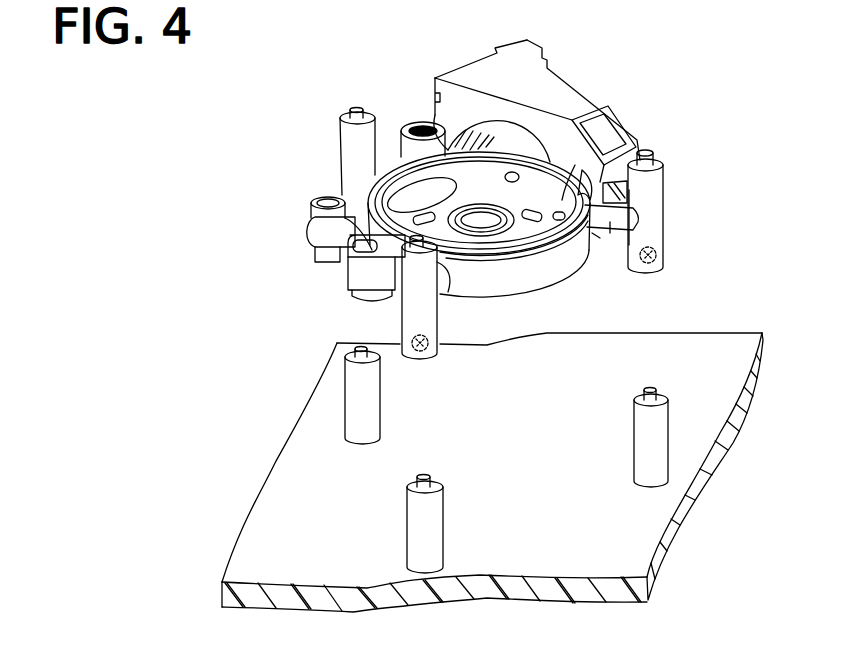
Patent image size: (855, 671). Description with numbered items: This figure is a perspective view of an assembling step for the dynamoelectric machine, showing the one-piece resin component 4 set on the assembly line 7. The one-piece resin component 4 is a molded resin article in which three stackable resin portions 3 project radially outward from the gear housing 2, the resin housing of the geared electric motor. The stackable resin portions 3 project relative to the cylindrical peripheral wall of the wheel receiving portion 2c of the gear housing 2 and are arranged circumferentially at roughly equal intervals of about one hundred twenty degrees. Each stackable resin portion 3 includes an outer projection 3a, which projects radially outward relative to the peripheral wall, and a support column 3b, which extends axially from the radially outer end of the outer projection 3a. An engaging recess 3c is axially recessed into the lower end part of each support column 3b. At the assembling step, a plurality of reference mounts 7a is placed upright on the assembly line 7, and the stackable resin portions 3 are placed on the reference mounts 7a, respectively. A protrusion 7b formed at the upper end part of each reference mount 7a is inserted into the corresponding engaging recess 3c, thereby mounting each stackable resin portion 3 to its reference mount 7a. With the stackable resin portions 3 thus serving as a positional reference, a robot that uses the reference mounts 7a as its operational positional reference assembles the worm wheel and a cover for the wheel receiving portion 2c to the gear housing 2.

The gear housing 2 is at (587, 93).
The wheel receiving portion 2c is at (523, 163).
The stackable resin portion 3 is at (340, 159).
The outer projection 3a is at (612, 222).
The support column 3b is at (653, 218).
The engaging recess 3c is at (663, 250).
The one-piece resin component 4 is at (400, 110).
The assembly line 7 is at (579, 526).
The reference mount 7a is at (353, 420).
The protrusion 7b is at (357, 347).